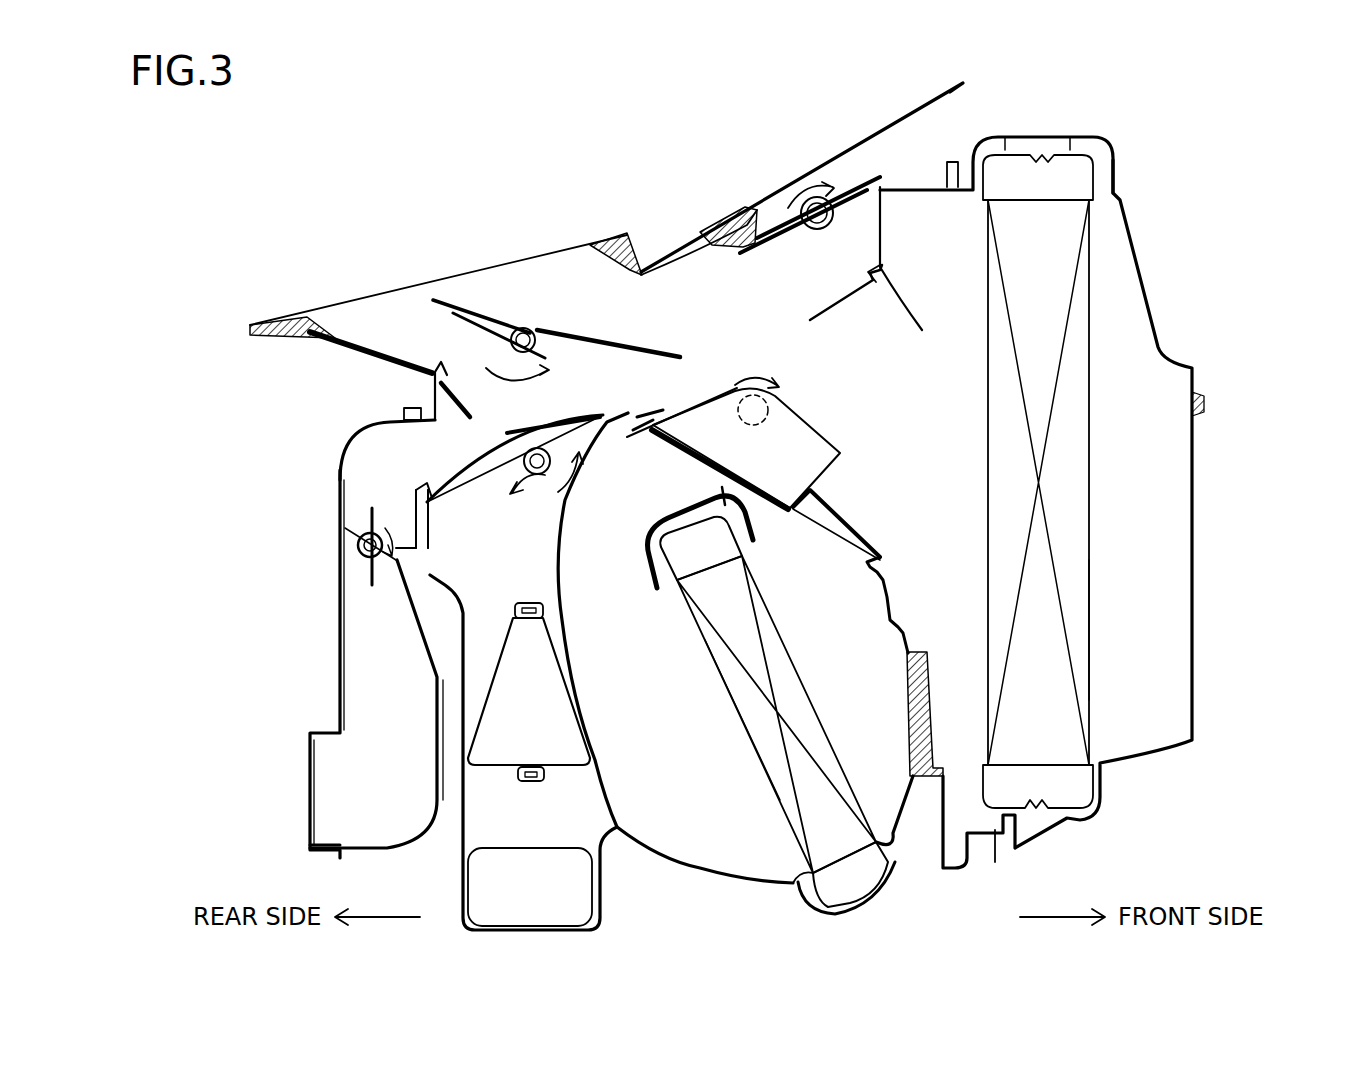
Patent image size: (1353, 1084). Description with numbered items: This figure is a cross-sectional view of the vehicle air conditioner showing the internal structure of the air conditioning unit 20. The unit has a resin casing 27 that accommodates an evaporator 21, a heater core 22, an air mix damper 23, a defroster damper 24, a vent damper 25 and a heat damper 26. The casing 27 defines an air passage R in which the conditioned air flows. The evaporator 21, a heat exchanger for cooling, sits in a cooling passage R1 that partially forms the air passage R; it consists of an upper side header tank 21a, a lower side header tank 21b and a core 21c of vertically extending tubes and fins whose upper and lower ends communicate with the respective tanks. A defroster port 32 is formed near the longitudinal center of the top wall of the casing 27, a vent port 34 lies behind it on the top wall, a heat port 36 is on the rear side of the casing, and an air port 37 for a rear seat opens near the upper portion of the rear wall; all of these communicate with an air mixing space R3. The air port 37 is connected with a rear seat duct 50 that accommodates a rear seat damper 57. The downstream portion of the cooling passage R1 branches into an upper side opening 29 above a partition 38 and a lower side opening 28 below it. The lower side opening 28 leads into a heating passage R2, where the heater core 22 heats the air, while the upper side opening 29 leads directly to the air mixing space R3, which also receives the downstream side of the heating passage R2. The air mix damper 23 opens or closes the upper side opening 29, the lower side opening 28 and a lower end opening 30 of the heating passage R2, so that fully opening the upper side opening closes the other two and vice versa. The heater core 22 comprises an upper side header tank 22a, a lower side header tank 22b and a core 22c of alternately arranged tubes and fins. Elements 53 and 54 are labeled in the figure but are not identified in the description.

The air conditioning unit 20 is at (727, 499).
The evaporator 21 is at (1100, 461).
The upper side header tank 21a is at (1080, 162).
The lower side header tank 21b is at (1085, 785).
The core 21c is at (1085, 628).
The heater core 22 is at (789, 631).
The upper side header tank 22a is at (680, 555).
The lower side header tank 22b is at (830, 888).
The core 22c is at (752, 732).
The air mix damper 23 is at (697, 466).
The defroster damper 24 is at (867, 187).
The vent damper 25 is at (458, 310).
The heat damper 26 is at (466, 452).
The casing 27 is at (1115, 172).
The lower side opening 28 is at (877, 553).
The upper side opening 29 is at (807, 320).
The lower end opening 30 is at (665, 410).
The defroster port 32 is at (752, 207).
The vent port 34 is at (303, 325).
The heat port 36 is at (492, 755).
The air port for a rear seat 37 is at (412, 410).
The partition 38 is at (913, 703).
The rear seat duct 50 is at (337, 668).
The rear duct channel 53 is at (413, 487).
The rear duct outlet 54 is at (318, 846).
The rear seat damper 57 is at (372, 518).
The air passage R is at (1136, 322).
The cooling passage R1 is at (1137, 577).
The heating passage R2 is at (670, 719).
The air mixing space R3 is at (625, 383).